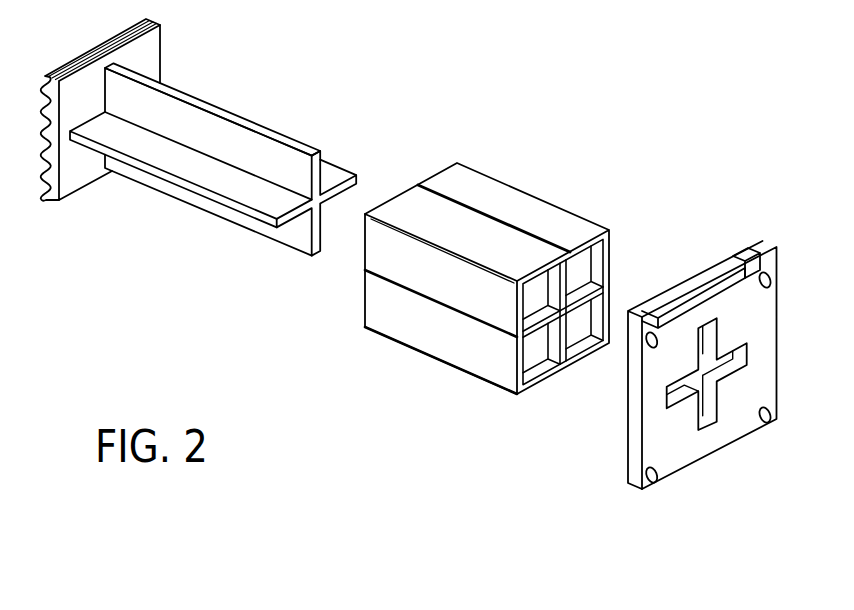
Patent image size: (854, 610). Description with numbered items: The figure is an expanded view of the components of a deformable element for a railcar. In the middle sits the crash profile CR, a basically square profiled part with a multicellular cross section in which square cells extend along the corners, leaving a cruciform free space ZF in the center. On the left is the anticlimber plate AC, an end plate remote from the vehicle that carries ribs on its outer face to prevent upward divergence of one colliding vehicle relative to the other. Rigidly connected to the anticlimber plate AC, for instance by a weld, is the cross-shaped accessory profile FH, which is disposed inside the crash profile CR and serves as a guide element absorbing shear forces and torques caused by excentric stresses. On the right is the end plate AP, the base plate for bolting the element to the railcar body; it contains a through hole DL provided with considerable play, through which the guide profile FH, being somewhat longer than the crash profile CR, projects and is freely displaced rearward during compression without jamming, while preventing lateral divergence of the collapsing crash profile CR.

The anticlimber plate AC is at (143, 55).
The accessory profile FH is at (270, 157).
The crash profile CR is at (493, 205).
The cruciform free space ZF is at (562, 333).
The end plate AP is at (737, 315).
The through hole DL is at (685, 443).